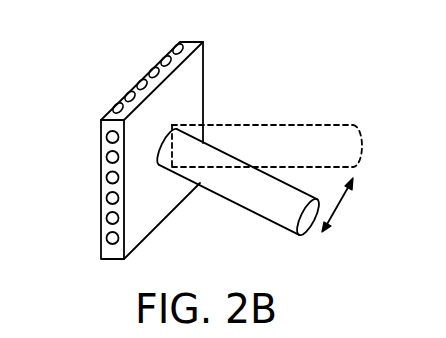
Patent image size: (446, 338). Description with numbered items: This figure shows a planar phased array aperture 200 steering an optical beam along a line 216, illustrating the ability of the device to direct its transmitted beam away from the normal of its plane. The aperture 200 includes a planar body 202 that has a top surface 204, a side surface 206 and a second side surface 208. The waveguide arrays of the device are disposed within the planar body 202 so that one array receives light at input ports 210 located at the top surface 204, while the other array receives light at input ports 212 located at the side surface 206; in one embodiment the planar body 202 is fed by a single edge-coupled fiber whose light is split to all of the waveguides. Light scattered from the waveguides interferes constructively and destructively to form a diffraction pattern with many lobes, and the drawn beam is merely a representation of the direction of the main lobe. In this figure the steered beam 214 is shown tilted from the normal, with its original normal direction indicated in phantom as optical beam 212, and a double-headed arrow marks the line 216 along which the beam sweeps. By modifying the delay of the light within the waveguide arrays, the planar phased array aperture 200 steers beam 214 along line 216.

The planar phased array aperture 200 is at (250, 83).
The planar body 202 is at (175, 46).
The top surface 204 is at (124, 260).
The side surface 206 is at (174, 208).
The side surface 208 is at (146, 83).
The input ports 210 is at (101, 210).
The optical beam 212 is at (283, 125).
The optical beam 214 is at (258, 214).
The line 216 is at (340, 202).